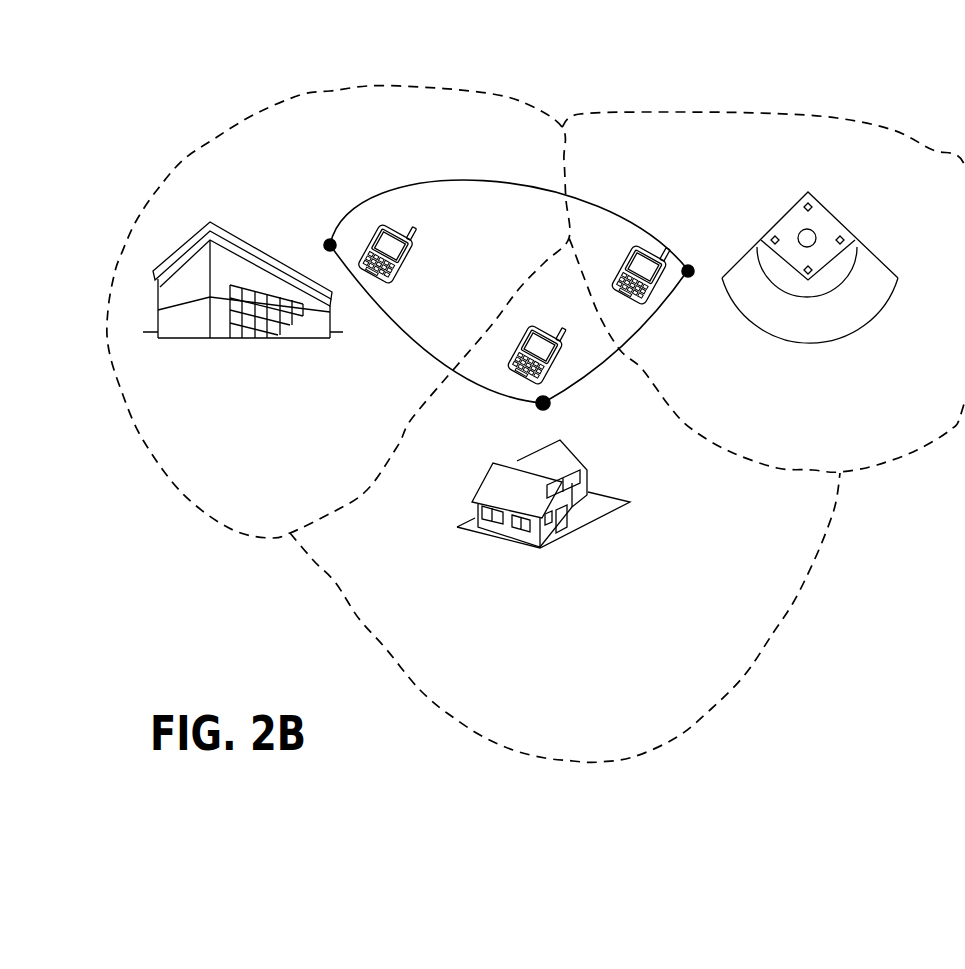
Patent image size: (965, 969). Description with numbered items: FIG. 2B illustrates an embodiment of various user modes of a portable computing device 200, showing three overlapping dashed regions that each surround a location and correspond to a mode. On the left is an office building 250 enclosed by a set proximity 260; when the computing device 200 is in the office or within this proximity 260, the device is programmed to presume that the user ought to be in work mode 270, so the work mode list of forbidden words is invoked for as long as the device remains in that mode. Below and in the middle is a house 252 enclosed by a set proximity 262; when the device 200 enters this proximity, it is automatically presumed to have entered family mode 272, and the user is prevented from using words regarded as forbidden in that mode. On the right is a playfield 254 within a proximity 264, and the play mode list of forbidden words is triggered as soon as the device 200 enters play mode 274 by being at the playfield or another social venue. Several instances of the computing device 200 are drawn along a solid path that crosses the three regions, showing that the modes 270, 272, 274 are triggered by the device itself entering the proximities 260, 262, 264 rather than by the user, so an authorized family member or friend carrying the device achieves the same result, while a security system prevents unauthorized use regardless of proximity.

The computing device 200 is at (412, 256).
The office building 250 is at (237, 233).
The house 252 is at (586, 455).
The playfield 254 is at (856, 242).
The set proximity of the office building 260 is at (397, 102).
The set proximity of the house 262 is at (760, 635).
The proximity of the playfield 264 is at (730, 122).
The work mode 270 is at (234, 390).
The family mode 272 is at (540, 590).
The play mode 274 is at (821, 390).